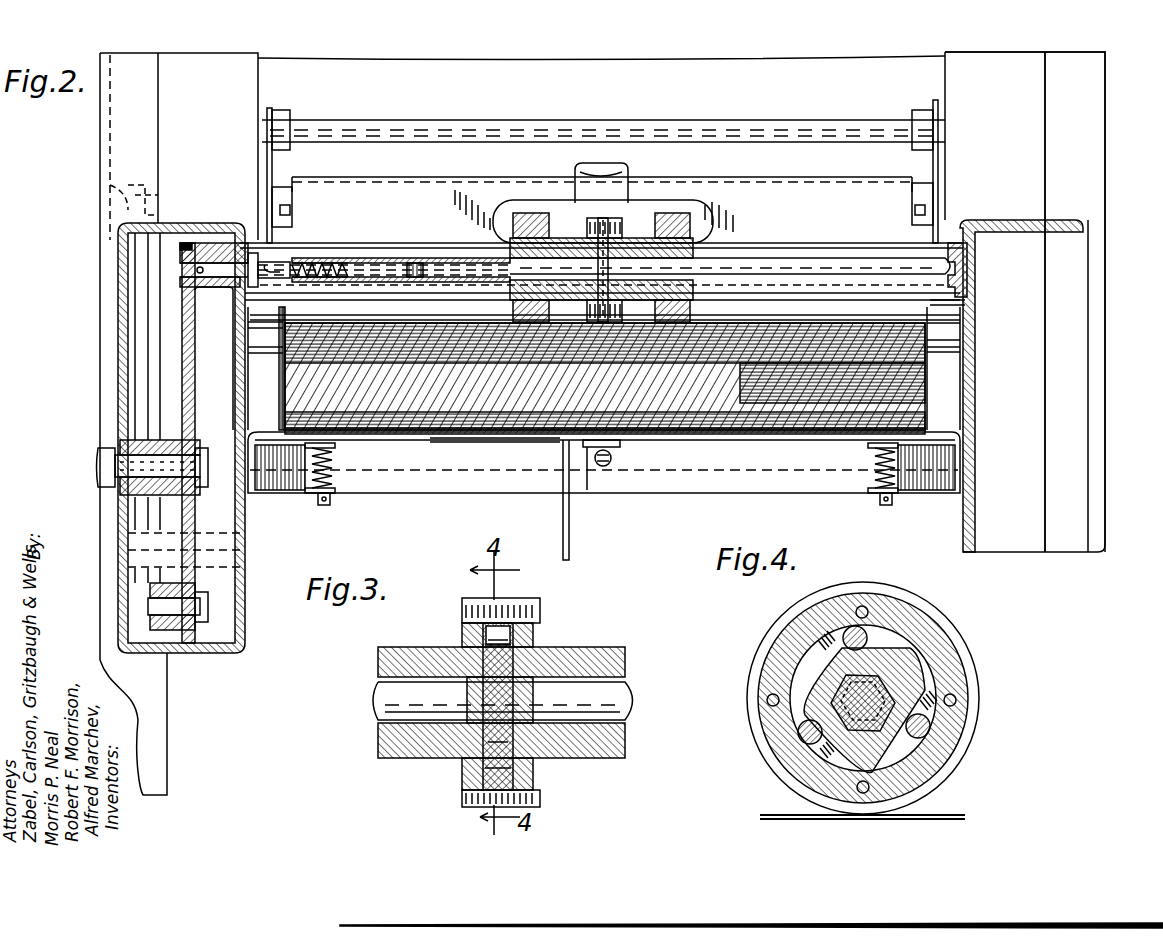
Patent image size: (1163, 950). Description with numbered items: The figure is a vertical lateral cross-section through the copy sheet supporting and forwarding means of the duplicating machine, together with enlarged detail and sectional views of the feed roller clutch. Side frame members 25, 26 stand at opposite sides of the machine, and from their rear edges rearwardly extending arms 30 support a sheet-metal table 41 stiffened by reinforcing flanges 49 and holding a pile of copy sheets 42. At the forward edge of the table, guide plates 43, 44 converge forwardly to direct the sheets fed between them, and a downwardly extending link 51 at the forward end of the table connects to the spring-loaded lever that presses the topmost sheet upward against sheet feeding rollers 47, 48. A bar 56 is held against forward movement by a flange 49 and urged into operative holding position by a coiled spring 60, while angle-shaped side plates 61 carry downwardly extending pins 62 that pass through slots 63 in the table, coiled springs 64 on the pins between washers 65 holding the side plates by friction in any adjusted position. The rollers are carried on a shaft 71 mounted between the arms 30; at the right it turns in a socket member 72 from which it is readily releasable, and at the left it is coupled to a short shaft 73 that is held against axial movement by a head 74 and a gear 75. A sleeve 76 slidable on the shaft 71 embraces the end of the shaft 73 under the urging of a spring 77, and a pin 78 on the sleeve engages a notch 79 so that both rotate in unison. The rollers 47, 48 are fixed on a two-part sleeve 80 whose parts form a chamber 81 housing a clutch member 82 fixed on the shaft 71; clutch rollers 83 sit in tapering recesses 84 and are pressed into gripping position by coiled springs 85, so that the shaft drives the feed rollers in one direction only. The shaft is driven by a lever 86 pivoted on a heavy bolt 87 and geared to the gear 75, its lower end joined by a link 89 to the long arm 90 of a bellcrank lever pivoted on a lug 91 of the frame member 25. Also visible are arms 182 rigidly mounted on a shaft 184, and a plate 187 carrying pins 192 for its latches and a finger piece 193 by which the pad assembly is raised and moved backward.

In FIG. 2, the frame member 25 is at (118, 117).
In FIG. 2, the frame member 26 is at (1085, 108).
In FIG. 2, the rearwardly extending arm 30 is at (122, 330).
In FIG. 2, the table 41 is at (656, 438).
In FIG. 2, the pile of copy sheets 42 is at (832, 335).
In FIG. 2, the guide plate 43 is at (950, 306).
In FIG. 2, the guide plate 44 is at (958, 400).
In FIG. 2, the sheet feeding roller 47 is at (530, 213).
In FIG. 4, the sheet feeding roller 47 is at (905, 600).
In FIG. 2, the sheet feeding roller 48 is at (676, 213).
In FIG. 2, the reinforcing flange 49 is at (270, 480).
In FIG. 2, the link 51 is at (563, 513).
In FIG. 2, the bar 56 is at (590, 480).
In FIG. 2, the coiled spring 60 is at (612, 465).
In FIG. 2, the side plate 61 is at (285, 380).
In FIG. 2, the pin 62 is at (332, 500).
In FIG. 2, the slot 63 is at (432, 436).
In FIG. 2, the coiled spring 64 is at (340, 484).
In FIG. 2, the washer 65 is at (340, 448).
In FIG. 2, the shaft 71 is at (762, 265).
In FIG. 3, the shaft 71 is at (585, 692).
In FIG. 4, the shaft 71 is at (765, 650).
In FIG. 2, the socket member 72 is at (968, 283).
In FIG. 2, the short shaft 73 is at (215, 268).
In FIG. 2, the head 74 is at (214, 358).
In FIG. 2, the gear 75 is at (188, 243).
In FIG. 2, the sleeve 76 is at (378, 258).
In FIG. 2, the spring 77 is at (320, 260).
In FIG. 2, the pin 78 is at (270, 278).
In FIG. 2, the notch 79 is at (290, 262).
In FIG. 2, the two-part sleeve 80 is at (640, 245).
In FIG. 3, the two-part sleeve 80 is at (405, 748).
In FIG. 4, the two-part sleeve 80 is at (795, 622).
In FIG. 2, the chamber 81 is at (600, 245).
In FIG. 3, the chamber 81 is at (487, 755).
In FIG. 4, the chamber 81 is at (800, 710).
In FIG. 2, the clutch member 82 is at (608, 240).
In FIG. 3, the clutch member 82 is at (455, 645).
In FIG. 4, the clutch member 82 is at (935, 640).
In FIG. 3, the clutch roller 83 is at (505, 638).
In FIG. 4, the clutch roller 83 is at (870, 630).
In FIG. 4, the tapering recess 84 is at (895, 642).
In FIG. 4, the coiled spring 85 is at (822, 635).
In FIG. 2, the lever 86 is at (192, 440).
In FIG. 2, the heavy bolt 87 is at (175, 465).
In FIG. 2, the link 89 is at (163, 630).
In FIG. 2, the long arm of bellcrank lever 90 is at (143, 368).
In FIG. 2, the lug 91 is at (115, 155).
In FIG. 2, the arm 182 is at (272, 163).
In FIG. 2, the shaft 184 is at (720, 125).
In FIG. 2, the plate 187 is at (844, 188).
In FIG. 2, the pin 192 is at (295, 210).
In FIG. 2, the finger piece 193 is at (596, 168).